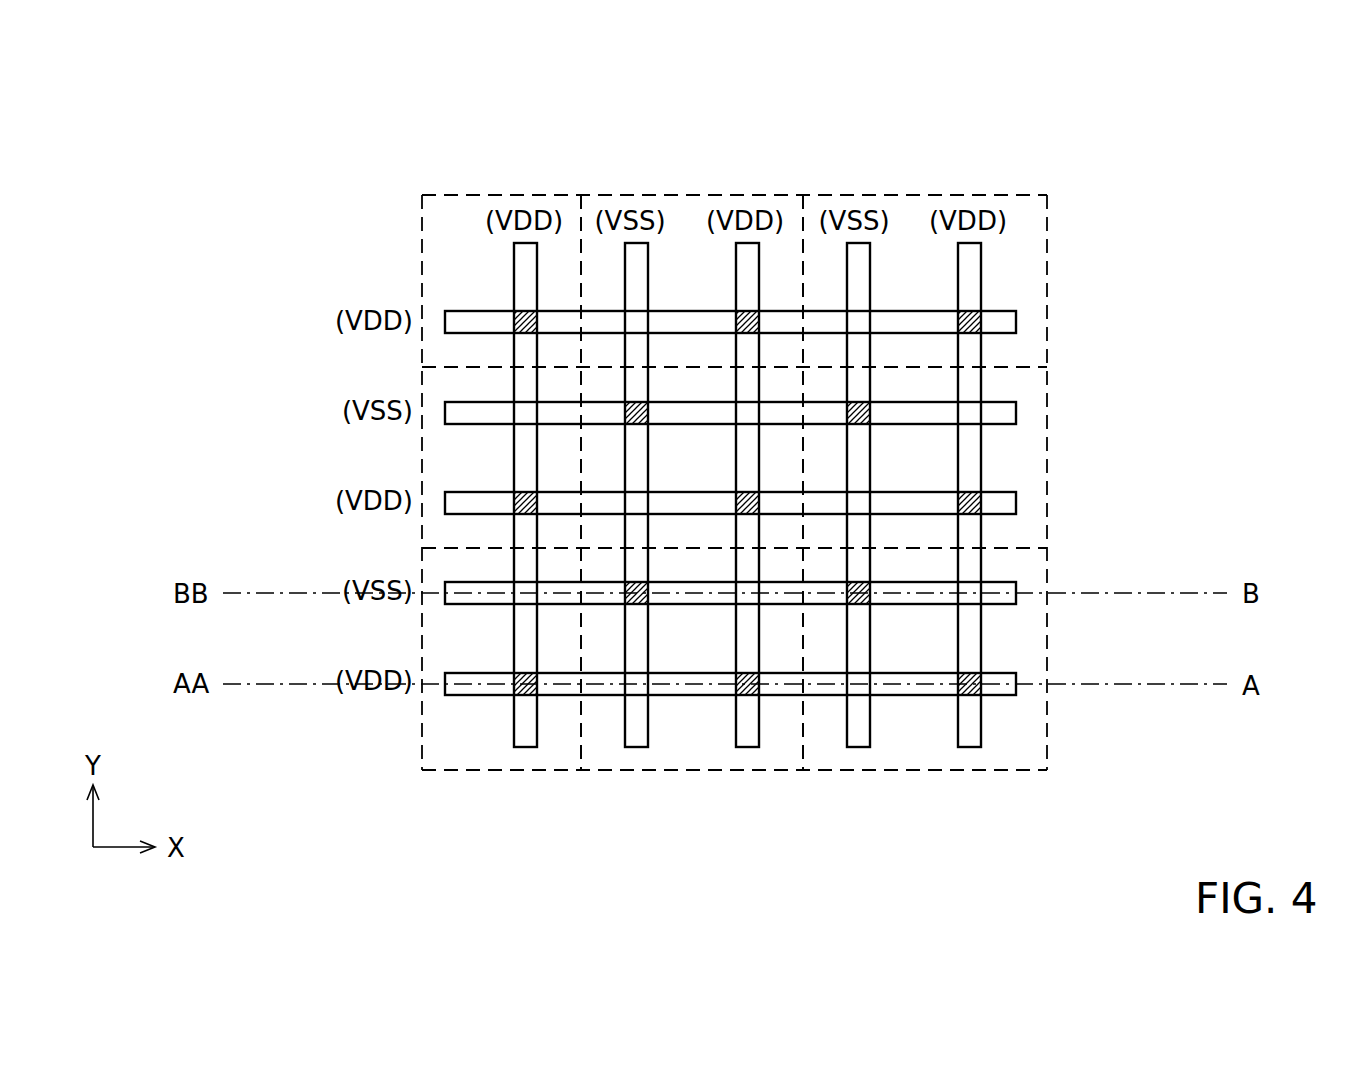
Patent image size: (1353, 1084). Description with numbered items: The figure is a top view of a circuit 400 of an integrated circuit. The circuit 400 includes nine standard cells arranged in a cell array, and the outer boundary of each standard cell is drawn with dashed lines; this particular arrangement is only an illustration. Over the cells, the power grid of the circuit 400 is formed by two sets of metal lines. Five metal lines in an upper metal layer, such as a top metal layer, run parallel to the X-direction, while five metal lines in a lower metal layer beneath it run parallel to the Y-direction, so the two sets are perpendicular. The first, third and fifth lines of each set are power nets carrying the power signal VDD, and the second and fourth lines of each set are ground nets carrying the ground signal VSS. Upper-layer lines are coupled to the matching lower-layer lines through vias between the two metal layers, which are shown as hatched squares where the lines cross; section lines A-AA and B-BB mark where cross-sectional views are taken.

The circuit 400 is at (1090, 163).